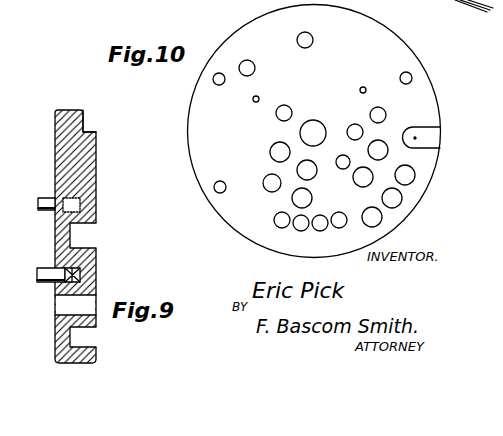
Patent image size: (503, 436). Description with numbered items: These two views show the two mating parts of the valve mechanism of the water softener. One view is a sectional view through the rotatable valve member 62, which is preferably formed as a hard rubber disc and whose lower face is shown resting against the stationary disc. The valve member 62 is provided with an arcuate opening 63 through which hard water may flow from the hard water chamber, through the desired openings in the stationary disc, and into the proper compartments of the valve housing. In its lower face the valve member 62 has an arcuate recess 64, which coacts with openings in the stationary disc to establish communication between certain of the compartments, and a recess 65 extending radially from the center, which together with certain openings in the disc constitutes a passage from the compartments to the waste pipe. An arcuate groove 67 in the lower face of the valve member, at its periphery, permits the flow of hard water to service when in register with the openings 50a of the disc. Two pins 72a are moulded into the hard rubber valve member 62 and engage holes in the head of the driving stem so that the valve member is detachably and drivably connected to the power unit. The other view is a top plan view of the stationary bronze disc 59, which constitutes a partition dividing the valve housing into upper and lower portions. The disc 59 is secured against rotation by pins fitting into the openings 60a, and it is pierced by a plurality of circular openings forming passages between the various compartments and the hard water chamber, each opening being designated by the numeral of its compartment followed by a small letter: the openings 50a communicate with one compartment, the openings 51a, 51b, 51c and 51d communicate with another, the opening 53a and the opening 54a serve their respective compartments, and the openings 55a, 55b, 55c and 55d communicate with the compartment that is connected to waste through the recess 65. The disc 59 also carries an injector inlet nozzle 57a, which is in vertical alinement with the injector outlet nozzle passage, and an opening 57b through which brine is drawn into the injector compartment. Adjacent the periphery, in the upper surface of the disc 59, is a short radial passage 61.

In FIG. 10, the circular openings 50a is at (373, 217).
In FIG. 10, the opening 51a is at (379, 150).
In FIG. 10, the opening 51b is at (343, 157).
In FIG. 10, the opening 51c is at (379, 115).
In FIG. 10, the opening 51d is at (362, 89).
In FIG. 10, the opening 53a is at (313, 133).
In FIG. 10, the opening 54a is at (306, 40).
In FIG. 10, the opening 55a is at (339, 221).
In FIG. 10, the opening 55b is at (302, 198).
In FIG. 10, the opening 55c is at (307, 170).
In FIG. 10, the opening 55d is at (284, 113).
In FIG. 10, the injector inlet nozzle 57a is at (257, 98).
In FIG. 10, the opening 57b is at (247, 68).
In FIG. 10, the bronze disc 59 is at (427, 78).
In FIG. 10, the openings 60a is at (219, 80).
In FIG. 10, the short radial passage 61 is at (418, 135).
In FIG. 9, the rotatable valve member 62 is at (62, 169).
In FIG. 9, the arcuate opening 63 is at (62, 305).
In FIG. 9, the arcuate recess 64 is at (88, 338).
In FIG. 9, the recess 65 is at (84, 240).
In FIG. 9, the arcuate groove 67 is at (88, 124).
In FIG. 9, the pins 72a is at (43, 272).